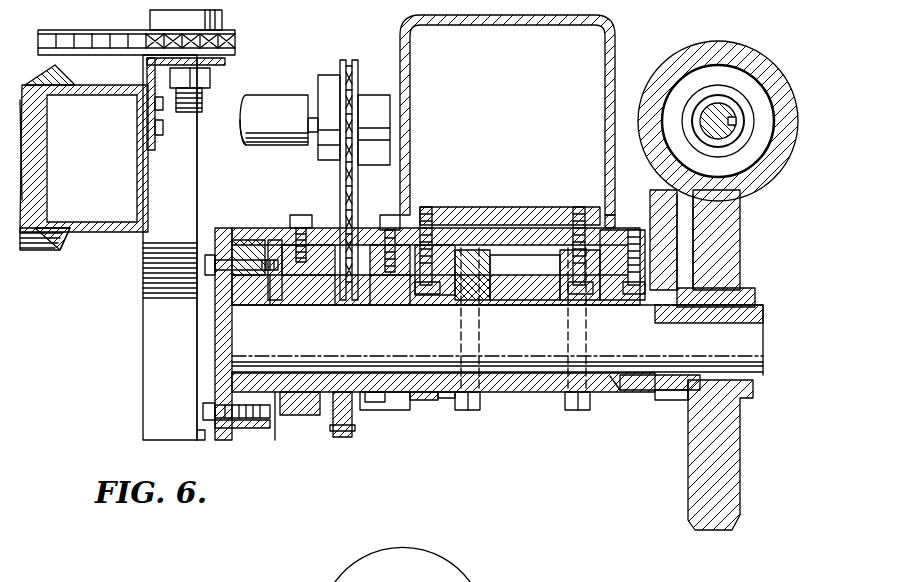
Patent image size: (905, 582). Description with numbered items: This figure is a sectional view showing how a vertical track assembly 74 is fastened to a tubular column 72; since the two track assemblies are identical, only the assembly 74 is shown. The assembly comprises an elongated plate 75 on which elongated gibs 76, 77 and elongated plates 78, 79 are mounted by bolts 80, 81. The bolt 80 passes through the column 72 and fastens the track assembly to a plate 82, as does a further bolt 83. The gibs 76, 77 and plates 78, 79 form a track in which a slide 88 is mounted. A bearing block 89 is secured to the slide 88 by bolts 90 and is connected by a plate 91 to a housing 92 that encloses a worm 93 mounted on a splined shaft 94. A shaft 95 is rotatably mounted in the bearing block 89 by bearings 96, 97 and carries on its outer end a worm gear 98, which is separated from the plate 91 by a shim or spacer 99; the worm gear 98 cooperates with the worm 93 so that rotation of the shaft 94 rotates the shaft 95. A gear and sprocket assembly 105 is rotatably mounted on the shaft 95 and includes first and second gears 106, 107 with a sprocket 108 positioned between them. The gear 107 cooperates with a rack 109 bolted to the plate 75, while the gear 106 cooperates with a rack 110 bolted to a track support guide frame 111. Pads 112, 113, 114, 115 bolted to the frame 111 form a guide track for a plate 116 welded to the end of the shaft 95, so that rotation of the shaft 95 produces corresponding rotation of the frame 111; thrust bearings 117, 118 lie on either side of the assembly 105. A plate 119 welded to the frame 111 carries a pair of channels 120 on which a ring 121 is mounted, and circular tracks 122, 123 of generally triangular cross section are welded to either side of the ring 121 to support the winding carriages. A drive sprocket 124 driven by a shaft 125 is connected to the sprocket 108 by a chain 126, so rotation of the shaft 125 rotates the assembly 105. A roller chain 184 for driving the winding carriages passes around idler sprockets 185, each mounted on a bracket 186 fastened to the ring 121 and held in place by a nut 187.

The tubular column 72 is at (615, 58).
The vertical track assembly 74 is at (648, 205).
The elongated plate 75 is at (375, 230).
The elongated gib 76 is at (430, 222).
The elongated gib 77 is at (605, 215).
The elongated plate 78 is at (465, 275).
The elongated plate 79 is at (585, 207).
The bolt 80 is at (437, 240).
The bolt 81 is at (632, 230).
The plate 82 is at (515, 212).
The bolt 83 is at (595, 250).
The slide 88 is at (490, 264).
The bearing block 89 is at (505, 392).
The bolt 90 is at (478, 410).
The plate 91 is at (665, 400).
The housing 92 is at (735, 50).
The worm 93 is at (730, 103).
The splined shaft 94 is at (726, 114).
The shaft 95 is at (612, 392).
The bearing 96 is at (445, 392).
The bearing 97 is at (640, 385).
The worm gear 98 is at (742, 445).
The shim or spacer 99 is at (678, 400).
The gear and sprocket assembly 105 is at (378, 418).
The first gear 106 is at (300, 415).
The second gear 107 is at (395, 410).
The sprocket 108 is at (352, 420).
The rack 109 is at (497, 340).
The rack 110 is at (318, 240).
The track support guide frame 111 is at (222, 228).
The pad 112 is at (236, 245).
The pad 113 is at (248, 240).
The pad 114 is at (274, 240).
The pad 115 is at (245, 428).
The plate 116 is at (275, 400).
The thrust bearing 117 is at (270, 412).
The thrust bearing 118 is at (422, 400).
The plate 119 is at (203, 350).
The channel 120 is at (143, 305).
The ring 121 is at (138, 222).
The circular track 122 is at (35, 250).
The circular track 123 is at (58, 69).
The drive sprocket 124 is at (338, 70).
The shaft 125 is at (262, 95).
The chain 126 is at (332, 190).
The roller chain 184 is at (70, 30).
The idler sprocket 185 is at (222, 17).
The bracket 186 is at (147, 78).
The nut 187 is at (212, 80).